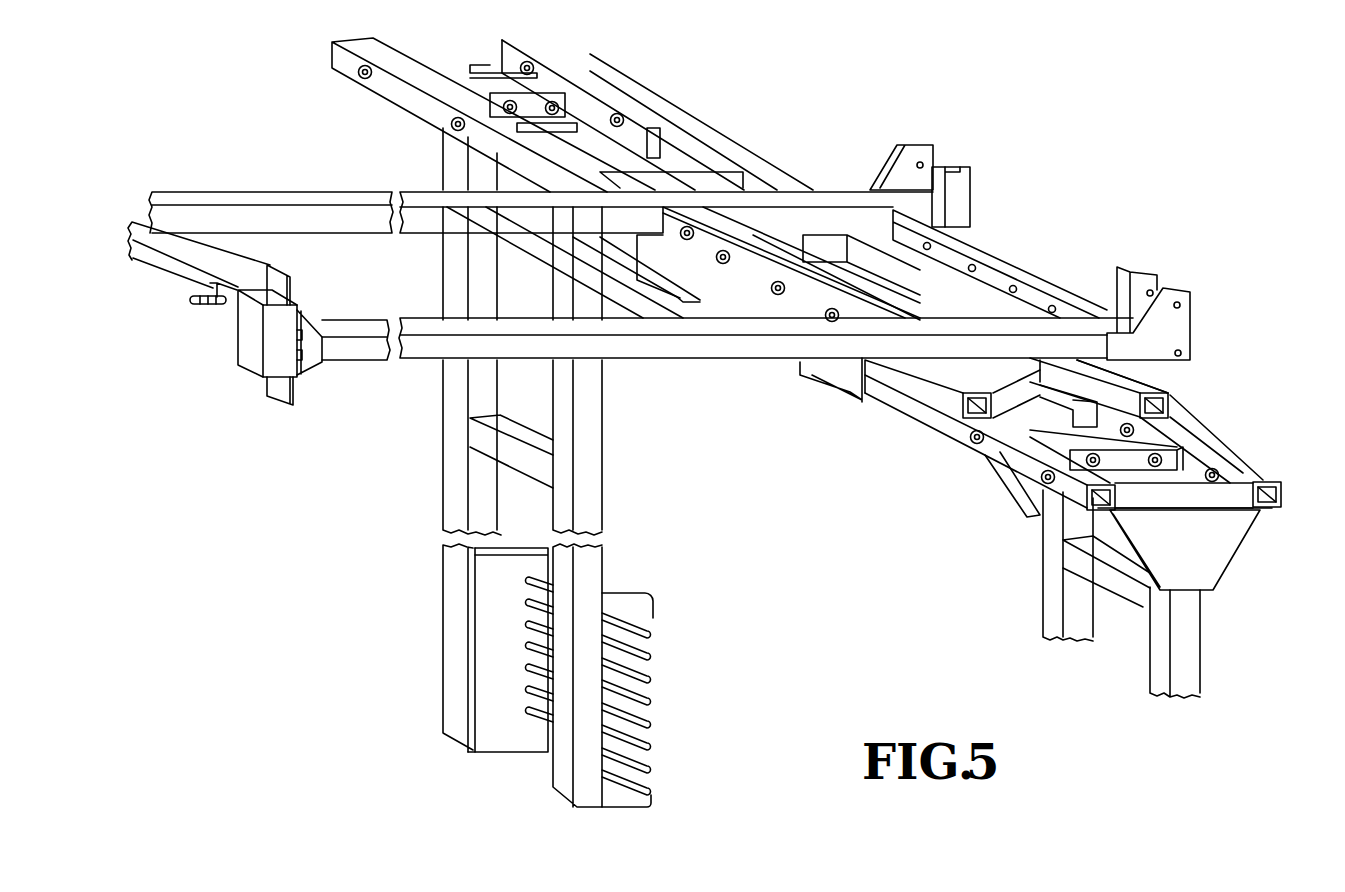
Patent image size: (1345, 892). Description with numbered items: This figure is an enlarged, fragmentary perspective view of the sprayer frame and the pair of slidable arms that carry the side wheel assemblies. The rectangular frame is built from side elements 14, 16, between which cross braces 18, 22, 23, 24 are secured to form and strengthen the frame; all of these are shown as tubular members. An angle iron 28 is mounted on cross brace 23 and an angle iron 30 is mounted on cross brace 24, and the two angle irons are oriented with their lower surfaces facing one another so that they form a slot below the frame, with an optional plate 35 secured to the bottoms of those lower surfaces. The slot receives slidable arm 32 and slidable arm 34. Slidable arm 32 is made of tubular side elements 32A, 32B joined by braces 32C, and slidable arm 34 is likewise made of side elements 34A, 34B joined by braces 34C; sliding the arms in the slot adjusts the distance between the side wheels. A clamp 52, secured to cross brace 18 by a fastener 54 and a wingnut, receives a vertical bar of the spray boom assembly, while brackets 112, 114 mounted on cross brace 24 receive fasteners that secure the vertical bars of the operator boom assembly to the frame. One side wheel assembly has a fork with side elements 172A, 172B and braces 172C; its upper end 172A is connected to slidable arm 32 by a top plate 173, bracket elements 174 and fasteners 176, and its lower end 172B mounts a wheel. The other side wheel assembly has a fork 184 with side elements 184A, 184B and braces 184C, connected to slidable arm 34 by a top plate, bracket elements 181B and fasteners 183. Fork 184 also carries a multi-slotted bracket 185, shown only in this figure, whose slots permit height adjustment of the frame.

The side element 14 is at (684, 352).
The side element 16 is at (282, 199).
The cross brace 18 is at (172, 273).
The cross brace 22 is at (493, 227).
The cross brace 23 is at (730, 230).
The cross brace 24 is at (1000, 262).
The angle iron 28 is at (737, 293).
The angle iron 30 is at (960, 257).
The slidable arm 32 is at (981, 435).
The side element 32A is at (960, 433).
The side element 32B is at (1280, 485).
The brace 32C is at (803, 246).
The slidable arm 34 is at (1185, 395).
The side element 34A is at (922, 383).
The side element 34B is at (557, 50).
The brace 34C is at (378, 88).
The plate 35 is at (862, 398).
The clamp 52 is at (243, 358).
The fastener 54 is at (207, 307).
The bracket 112 is at (1183, 315).
The bracket 114 is at (925, 155).
The side element 172A is at (1040, 594).
The side element 172B is at (1185, 662).
The brace 172C is at (1123, 595).
The top plate 173 is at (1213, 547).
The bracket element 174 is at (1133, 460).
The fastener 176 is at (1035, 461).
The bracket element 181B is at (502, 58).
The fastener 183 is at (350, 68).
The fork 184 is at (512, 331).
The side element 184A is at (445, 397).
The side element 184B is at (593, 455).
The brace 184C is at (504, 418).
The multi-slotted bracket 185 is at (650, 580).